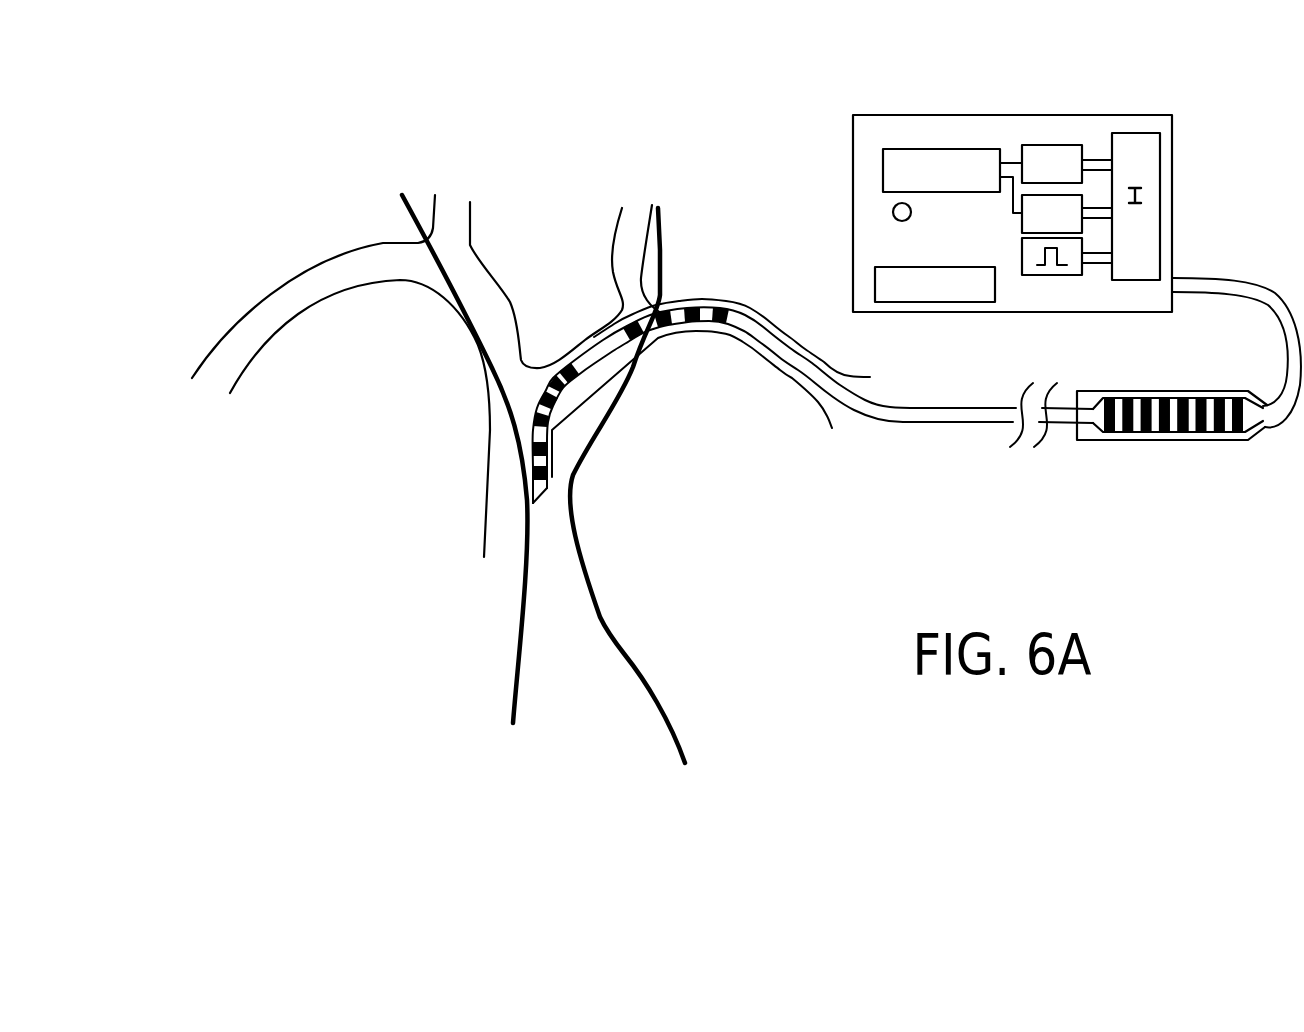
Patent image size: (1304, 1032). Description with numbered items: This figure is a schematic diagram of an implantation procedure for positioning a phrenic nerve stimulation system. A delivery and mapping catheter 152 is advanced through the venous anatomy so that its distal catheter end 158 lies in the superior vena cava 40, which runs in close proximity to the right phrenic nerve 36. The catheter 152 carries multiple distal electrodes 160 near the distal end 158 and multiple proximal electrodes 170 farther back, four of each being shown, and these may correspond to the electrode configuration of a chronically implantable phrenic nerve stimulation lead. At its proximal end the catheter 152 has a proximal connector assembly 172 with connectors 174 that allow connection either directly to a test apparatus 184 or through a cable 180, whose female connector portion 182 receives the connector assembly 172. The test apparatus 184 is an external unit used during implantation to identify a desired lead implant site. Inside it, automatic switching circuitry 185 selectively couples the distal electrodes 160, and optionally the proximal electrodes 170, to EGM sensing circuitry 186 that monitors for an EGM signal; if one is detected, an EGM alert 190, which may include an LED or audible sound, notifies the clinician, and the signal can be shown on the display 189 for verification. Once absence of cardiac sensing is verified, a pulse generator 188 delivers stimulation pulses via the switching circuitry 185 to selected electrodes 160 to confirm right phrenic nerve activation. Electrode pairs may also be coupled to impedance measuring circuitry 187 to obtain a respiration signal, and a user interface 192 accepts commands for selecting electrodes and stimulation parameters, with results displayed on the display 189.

The right phrenic nerve 36 is at (405, 211).
The superior vena cava 40 is at (490, 477).
The delivery and mapping catheter 152 is at (850, 412).
The distal catheter end 158 is at (547, 490).
The distal electrodes 160 is at (553, 476).
The proximal electrodes 170 is at (686, 333).
The proximal connector assembly 172 is at (1140, 395).
The connectors 174 is at (1223, 433).
The cable 180 is at (1217, 277).
The female connector portion 182 is at (1143, 440).
The test apparatus 184 is at (1083, 115).
The automatic switching circuitry 185 is at (1160, 173).
The EGM sensing circuitry 186 is at (1030, 145).
The impedance measuring circuitry 187 is at (1022, 223).
The pulse generator 188 is at (1041, 276).
The display 189 is at (883, 168).
The EGM alert 190 is at (892, 207).
The user interface 192 is at (923, 303).